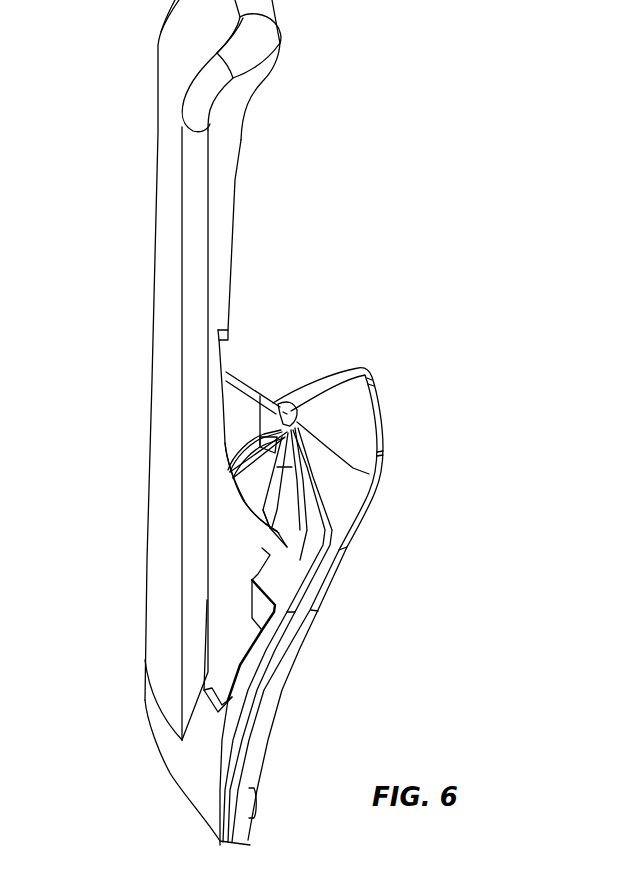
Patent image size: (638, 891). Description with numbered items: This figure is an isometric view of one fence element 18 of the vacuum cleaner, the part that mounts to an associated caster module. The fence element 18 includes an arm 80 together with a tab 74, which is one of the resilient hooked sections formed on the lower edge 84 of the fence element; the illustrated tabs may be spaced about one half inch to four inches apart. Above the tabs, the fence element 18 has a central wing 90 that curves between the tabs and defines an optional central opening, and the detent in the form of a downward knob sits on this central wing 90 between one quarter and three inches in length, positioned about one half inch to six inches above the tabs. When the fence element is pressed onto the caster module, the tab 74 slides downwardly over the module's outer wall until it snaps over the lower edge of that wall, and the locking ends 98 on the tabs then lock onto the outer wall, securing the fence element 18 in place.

The fence element 18 is at (233, 201).
The arm 80 is at (160, 400).
The lower edge 84 is at (185, 800).
The central wing 90 is at (340, 508).
The locking ends 98 is at (235, 412).
The tab 74 is at (258, 800).